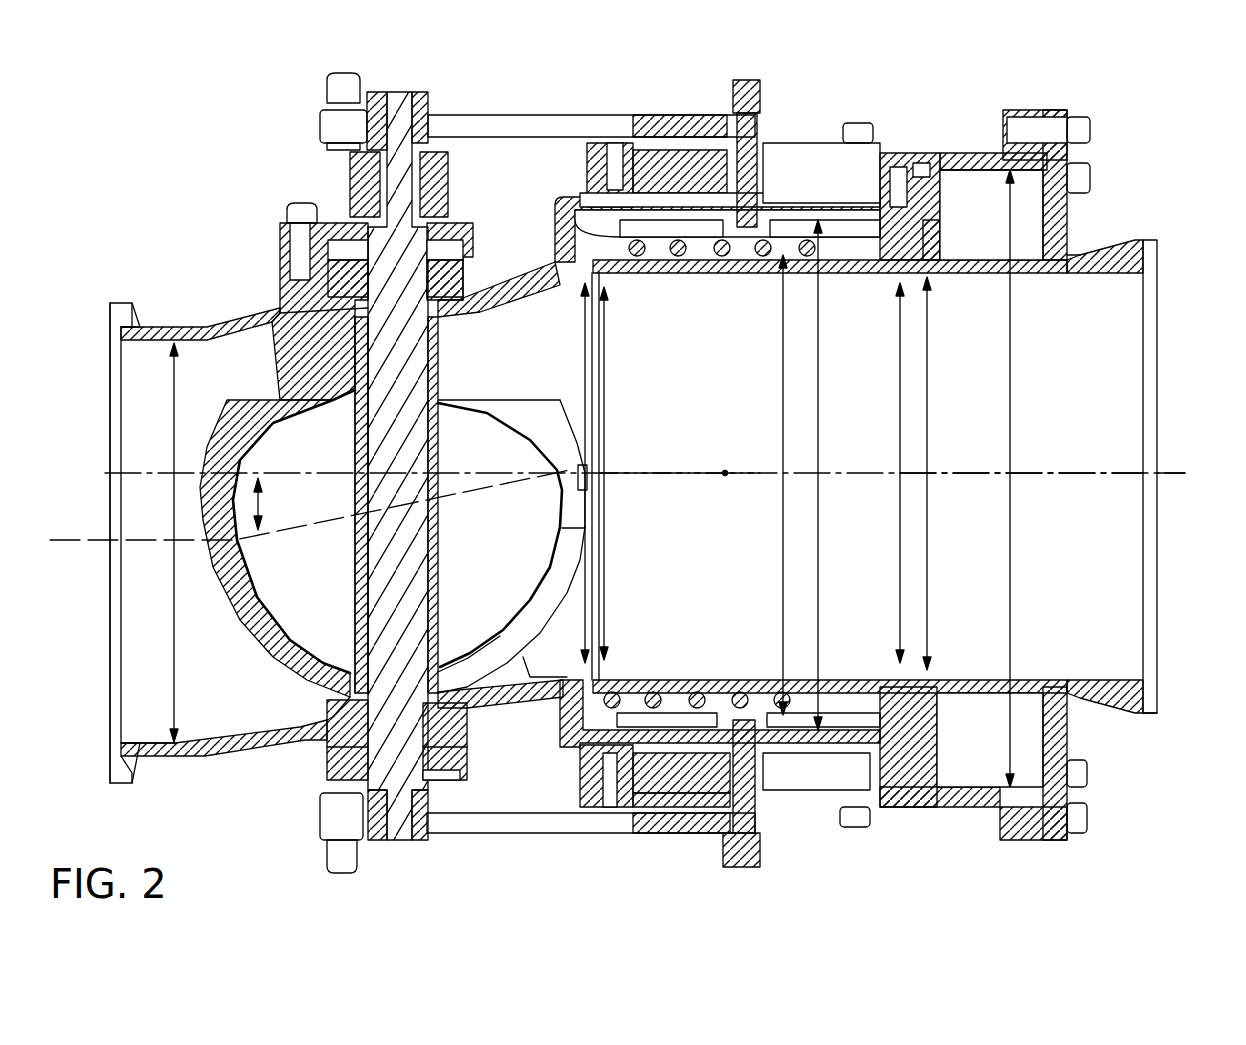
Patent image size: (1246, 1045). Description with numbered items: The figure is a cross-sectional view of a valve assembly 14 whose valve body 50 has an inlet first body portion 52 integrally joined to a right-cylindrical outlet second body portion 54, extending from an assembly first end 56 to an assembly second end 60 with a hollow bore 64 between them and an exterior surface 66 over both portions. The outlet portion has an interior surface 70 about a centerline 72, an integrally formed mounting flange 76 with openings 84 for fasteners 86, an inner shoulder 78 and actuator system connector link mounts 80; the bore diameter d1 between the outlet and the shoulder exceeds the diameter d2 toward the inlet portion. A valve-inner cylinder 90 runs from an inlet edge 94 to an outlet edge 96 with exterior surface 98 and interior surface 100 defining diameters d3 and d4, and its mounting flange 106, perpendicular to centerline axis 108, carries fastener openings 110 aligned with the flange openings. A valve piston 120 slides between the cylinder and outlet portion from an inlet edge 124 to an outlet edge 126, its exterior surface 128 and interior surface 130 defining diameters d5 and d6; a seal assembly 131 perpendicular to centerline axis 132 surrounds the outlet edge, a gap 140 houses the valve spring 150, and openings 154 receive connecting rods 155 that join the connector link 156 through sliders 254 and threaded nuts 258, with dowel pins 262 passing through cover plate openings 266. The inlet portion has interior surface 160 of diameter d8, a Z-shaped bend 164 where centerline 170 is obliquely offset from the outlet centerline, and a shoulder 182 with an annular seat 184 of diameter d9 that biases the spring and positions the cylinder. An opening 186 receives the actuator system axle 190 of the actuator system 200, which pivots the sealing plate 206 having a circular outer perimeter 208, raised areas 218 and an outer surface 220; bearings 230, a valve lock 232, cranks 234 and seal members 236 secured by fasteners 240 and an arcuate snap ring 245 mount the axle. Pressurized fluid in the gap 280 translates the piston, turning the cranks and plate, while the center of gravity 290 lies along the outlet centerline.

The valve assembly 14 is at (78, 270).
The valve body 50 is at (262, 753).
The first body portion 52 is at (205, 310).
The second body portion 54 is at (930, 140).
The assembly first end 56 is at (100, 768).
The assembly second end 60 is at (1172, 697).
The bore 64 is at (127, 347).
The exterior surface 66 is at (175, 323).
The interior surface 70 is at (993, 163).
The centerline 72 is at (1167, 477).
The mounting flange 76 is at (1027, 105).
The inner shoulder 78 is at (913, 187).
The actuator system connector link mounts 80 is at (800, 147).
The openings 84 is at (1013, 133).
The fastener 86 is at (1090, 140).
The valve-inner cylinder 90 is at (1070, 217).
The inlet edge 94 is at (590, 262).
The outlet edge 96 is at (1167, 240).
The exterior surface 98 is at (957, 253).
The interior surface 100 is at (1043, 277).
The mounting flange 106 is at (1067, 717).
The centerline axis 108 is at (1023, 477).
The fastener openings 110 is at (1062, 820).
The valve piston 120 is at (950, 790).
The inlet edge 124 is at (563, 720).
The outlet edge 126 is at (937, 747).
The exterior surface 128 is at (880, 205).
The interior surface 130 is at (835, 232).
The seal assembly 131 is at (908, 127).
The centerline axis 132 is at (713, 470).
The gap 140 is at (688, 230).
The valve spring 150 is at (713, 250).
The openings 154 is at (757, 713).
The connecting rod 155 is at (789, 178).
The actuator system connector link 156 is at (533, 113).
The interior surface 160 is at (160, 740).
The bend 164 is at (255, 266).
The centerline 170 is at (157, 538).
The shoulder 182 is at (557, 223).
The annular seat 184 is at (572, 284).
The opening 186 is at (447, 770).
The actuator system axle 190 is at (400, 533).
The actuator system 200 is at (658, 858).
The sealing plate 206 is at (265, 655).
The outer perimeter 208 is at (547, 643).
The raised area 218 is at (328, 592).
The outer surface 220 is at (310, 680).
The bearings 230 is at (333, 292).
The valve lock 232 is at (435, 150).
The cranks 234 is at (380, 90).
The seal members 236 is at (467, 222).
The fasteners 240 is at (283, 213).
The arcuate snap ring 245 is at (447, 782).
The slider 254 is at (693, 135).
The threaded nut 258 is at (757, 857).
The dowel pins 262 is at (810, 807).
The cover plate openings 266 is at (577, 770).
The gap 280 is at (1022, 772).
The center of gravity 290 is at (727, 478).
The diameter d1 is at (1010, 365).
The diameter d2 is at (606, 385).
The external diameter d3 is at (928, 424).
The internal diameter d4 is at (900, 523).
The external diameter d5 is at (820, 422).
The internal diameter d6 is at (783, 523).
The diameter d8 is at (176, 600).
The diameter d9 is at (583, 365).